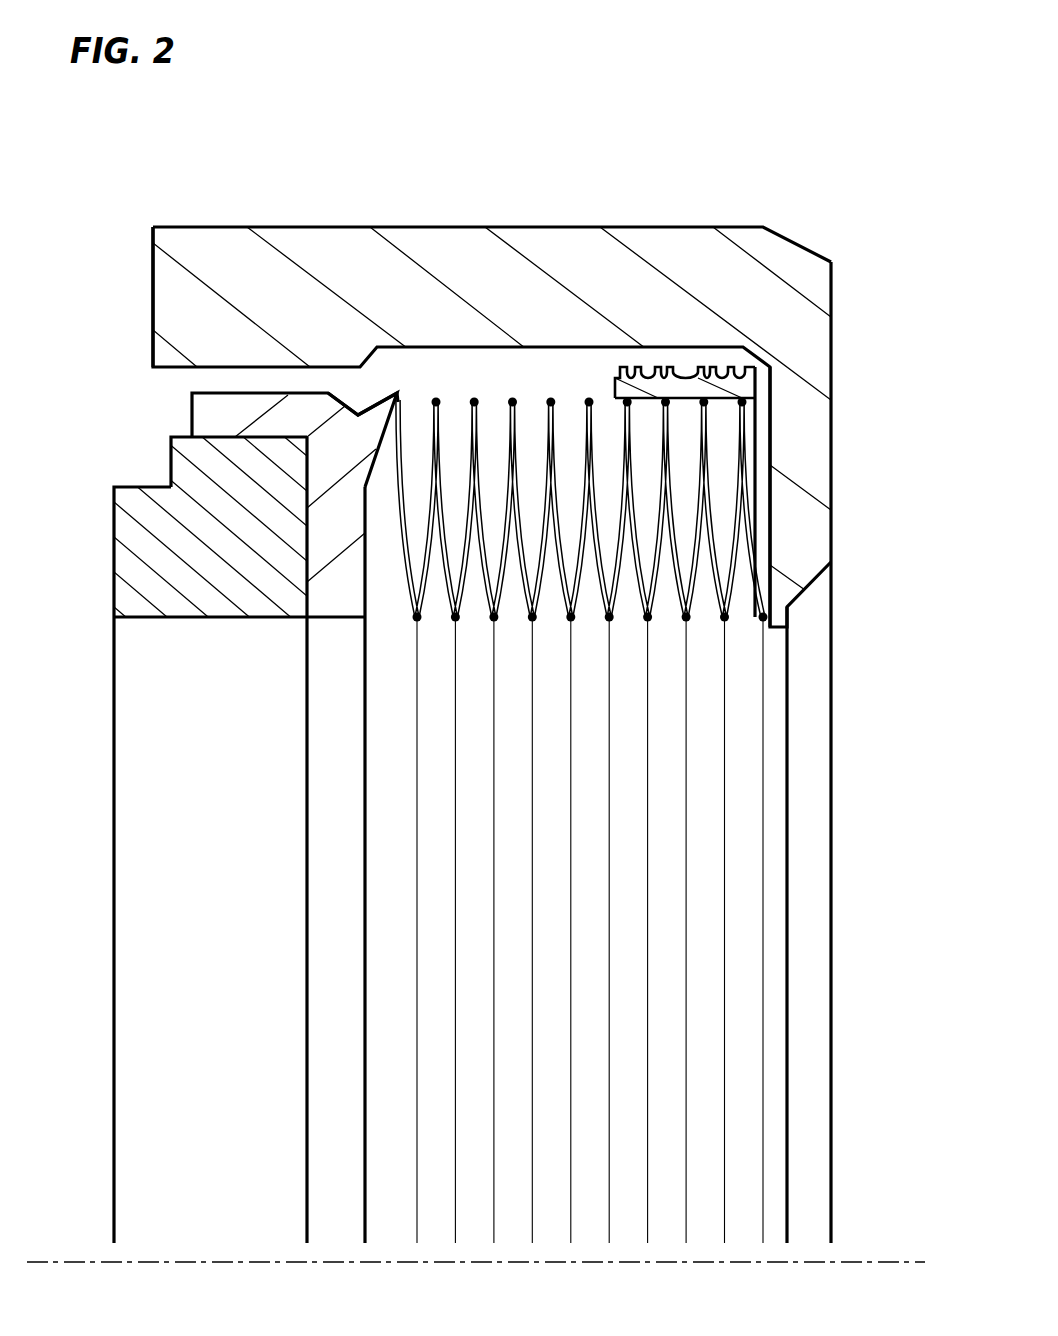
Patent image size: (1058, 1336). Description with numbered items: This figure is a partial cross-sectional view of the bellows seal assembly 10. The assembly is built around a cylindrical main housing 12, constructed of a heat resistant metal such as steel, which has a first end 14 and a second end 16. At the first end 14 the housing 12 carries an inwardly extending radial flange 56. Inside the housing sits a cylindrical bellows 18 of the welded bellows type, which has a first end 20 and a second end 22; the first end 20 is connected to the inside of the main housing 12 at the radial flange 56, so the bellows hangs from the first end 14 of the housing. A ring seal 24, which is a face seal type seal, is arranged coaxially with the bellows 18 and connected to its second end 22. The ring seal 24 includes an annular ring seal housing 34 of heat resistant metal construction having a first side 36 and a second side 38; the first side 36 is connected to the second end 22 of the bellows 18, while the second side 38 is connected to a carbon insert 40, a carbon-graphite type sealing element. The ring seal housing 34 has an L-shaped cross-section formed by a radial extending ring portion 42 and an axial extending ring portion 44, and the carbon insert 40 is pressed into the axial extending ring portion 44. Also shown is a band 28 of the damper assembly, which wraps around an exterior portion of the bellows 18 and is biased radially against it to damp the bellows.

The bellows seal assembly 10 is at (848, 60).
The cylindrical main housing 12 is at (552, 227).
The first end 14 is at (831, 290).
The second end 16 is at (152, 292).
The cylindrical bellows 18 is at (763, 452).
The first end 20 is at (753, 562).
The second end 22 is at (397, 495).
The ring seal 24 is at (142, 417).
The band 28 is at (745, 392).
The annular ring seal housing 34 is at (297, 415).
The first side 36 is at (365, 582).
The second side 38 is at (307, 543).
The carbon insert 40 is at (122, 563).
The radial extending ring portion 42 is at (349, 616).
The axial extending ring portion 44 is at (236, 431).
The inwardly extending radial flange 56 is at (813, 527).